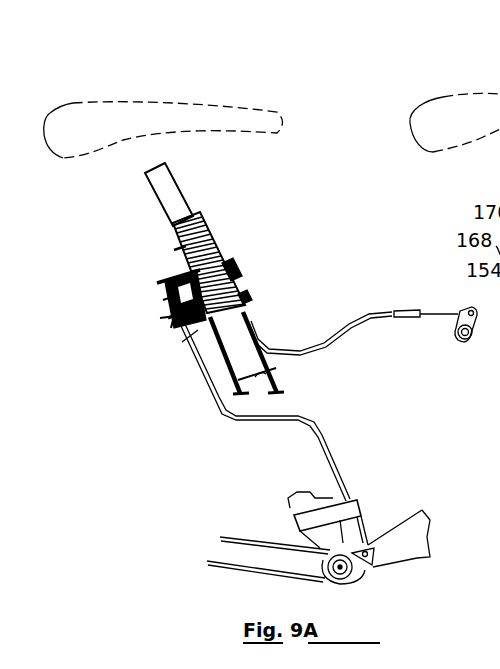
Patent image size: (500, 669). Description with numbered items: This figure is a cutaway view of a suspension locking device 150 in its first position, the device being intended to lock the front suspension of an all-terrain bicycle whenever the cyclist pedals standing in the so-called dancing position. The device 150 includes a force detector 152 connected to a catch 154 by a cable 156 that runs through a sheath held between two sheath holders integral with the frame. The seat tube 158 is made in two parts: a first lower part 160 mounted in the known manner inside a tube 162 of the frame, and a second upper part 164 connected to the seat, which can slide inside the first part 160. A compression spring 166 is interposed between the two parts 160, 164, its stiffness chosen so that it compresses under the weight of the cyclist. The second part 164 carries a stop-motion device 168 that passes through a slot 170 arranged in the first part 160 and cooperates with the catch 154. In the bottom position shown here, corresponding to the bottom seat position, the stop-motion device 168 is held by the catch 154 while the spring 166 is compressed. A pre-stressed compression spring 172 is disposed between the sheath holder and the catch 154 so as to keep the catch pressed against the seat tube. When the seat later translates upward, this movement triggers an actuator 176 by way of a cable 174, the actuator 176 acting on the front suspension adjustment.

The suspension locking device 150 is at (320, 269).
The force detector 152 is at (366, 585).
The catch 154 is at (178, 278).
The cable 156 is at (202, 380).
The seat tube 158 is at (216, 252).
The first lower part 160 is at (272, 370).
The tube of the frame 162 is at (282, 384).
The second upper part 164 is at (180, 196).
The compression spring 166 is at (222, 264).
The stop-motion device 168 is at (186, 273).
The slot 170 is at (178, 252).
The pre-stressed compression spring 172 is at (174, 298).
The cable 174 is at (398, 312).
The actuator 176 is at (458, 323).